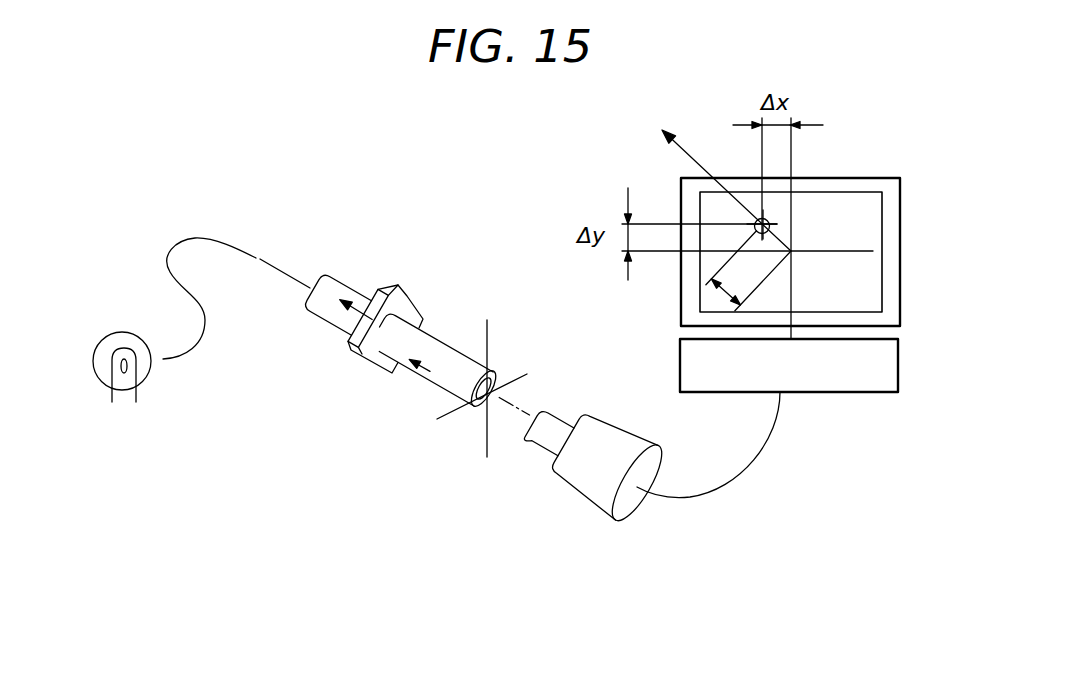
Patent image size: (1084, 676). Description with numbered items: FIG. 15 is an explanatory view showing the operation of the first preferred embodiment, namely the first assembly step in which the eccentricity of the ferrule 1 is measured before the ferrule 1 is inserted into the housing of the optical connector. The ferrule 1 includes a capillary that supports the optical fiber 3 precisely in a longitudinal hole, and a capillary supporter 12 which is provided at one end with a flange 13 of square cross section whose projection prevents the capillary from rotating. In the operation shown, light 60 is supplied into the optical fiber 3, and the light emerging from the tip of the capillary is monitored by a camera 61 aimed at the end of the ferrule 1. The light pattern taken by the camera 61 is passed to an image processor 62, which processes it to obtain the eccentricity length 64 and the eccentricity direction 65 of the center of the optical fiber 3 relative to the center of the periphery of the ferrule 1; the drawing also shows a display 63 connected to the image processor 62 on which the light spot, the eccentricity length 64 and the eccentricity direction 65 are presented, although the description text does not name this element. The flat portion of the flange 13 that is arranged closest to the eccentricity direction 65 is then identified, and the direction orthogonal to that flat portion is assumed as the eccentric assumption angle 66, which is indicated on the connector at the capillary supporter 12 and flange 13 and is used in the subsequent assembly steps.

The ferrule 1 is at (455, 332).
The optical fiber 3 is at (262, 259).
The capillary supporter 12 is at (327, 284).
The flange 13 is at (383, 305).
The light 60 is at (116, 332).
The camera 61 is at (580, 480).
The image processor 62 is at (850, 380).
The monitor 63 is at (867, 193).
The eccentricity length 64 is at (748, 260).
The eccentricity direction 65 is at (430, 377).
The eccentric assumption angle 66 is at (340, 314).